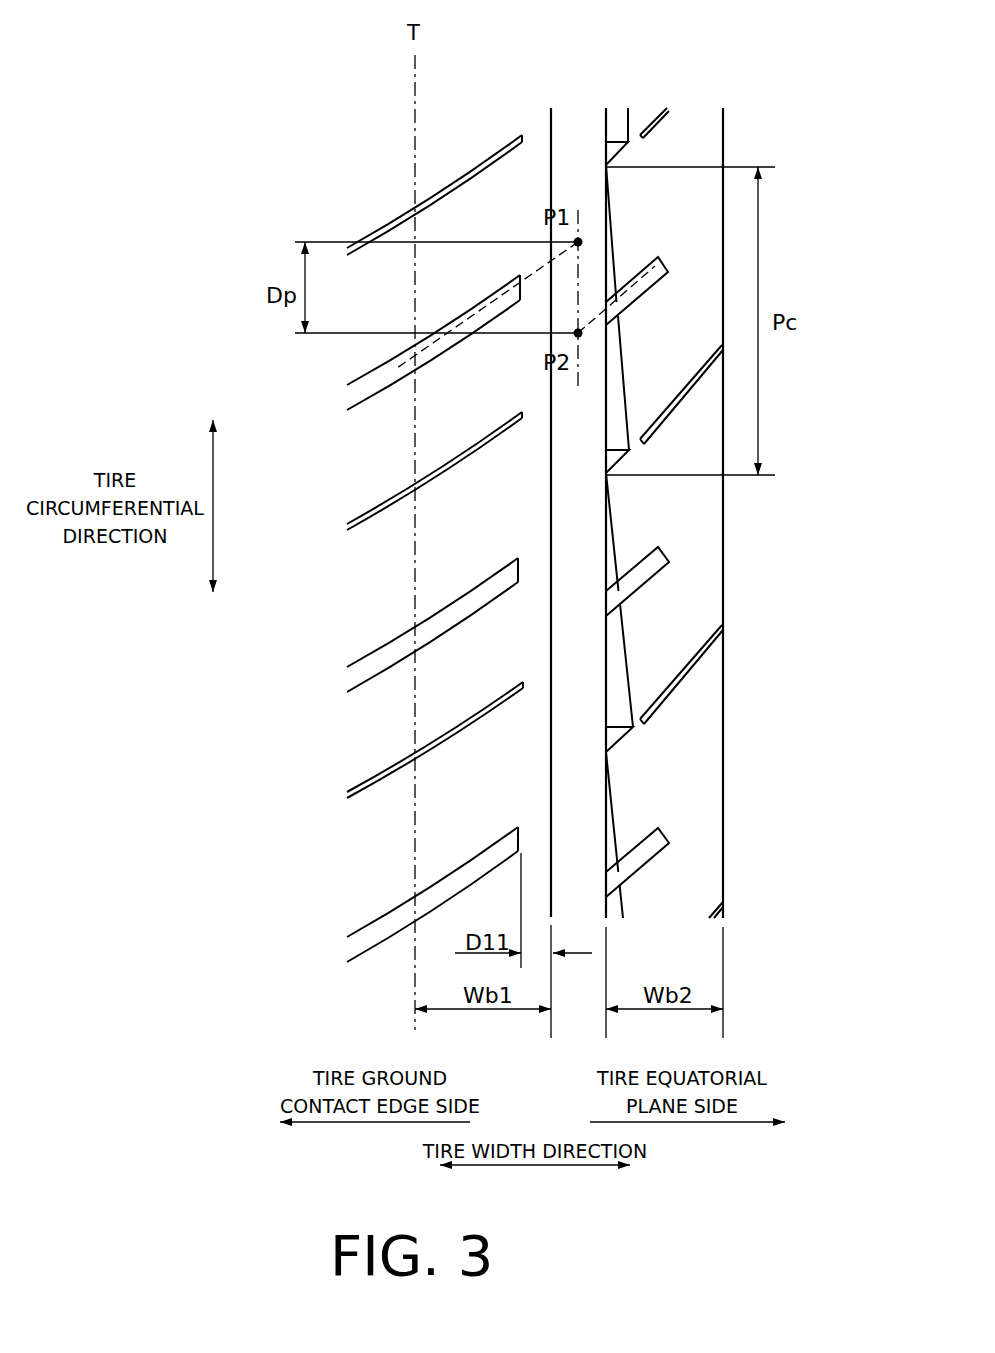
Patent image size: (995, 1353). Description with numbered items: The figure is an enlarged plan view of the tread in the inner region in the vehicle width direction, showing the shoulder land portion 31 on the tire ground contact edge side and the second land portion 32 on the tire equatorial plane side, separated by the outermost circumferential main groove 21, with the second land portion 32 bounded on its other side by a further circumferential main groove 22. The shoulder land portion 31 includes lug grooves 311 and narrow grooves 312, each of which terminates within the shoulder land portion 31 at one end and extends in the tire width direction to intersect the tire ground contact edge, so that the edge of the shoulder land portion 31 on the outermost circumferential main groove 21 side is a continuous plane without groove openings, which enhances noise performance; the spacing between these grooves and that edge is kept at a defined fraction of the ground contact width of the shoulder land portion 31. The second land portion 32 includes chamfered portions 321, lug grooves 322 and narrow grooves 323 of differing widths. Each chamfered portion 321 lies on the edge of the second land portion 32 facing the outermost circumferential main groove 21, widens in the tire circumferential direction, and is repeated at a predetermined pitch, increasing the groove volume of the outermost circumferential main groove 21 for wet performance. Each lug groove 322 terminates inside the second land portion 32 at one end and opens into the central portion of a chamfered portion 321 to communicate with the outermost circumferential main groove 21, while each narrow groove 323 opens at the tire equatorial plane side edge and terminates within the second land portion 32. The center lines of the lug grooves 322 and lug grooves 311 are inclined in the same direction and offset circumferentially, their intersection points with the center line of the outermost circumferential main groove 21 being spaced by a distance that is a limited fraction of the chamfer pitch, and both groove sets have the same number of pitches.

The outermost circumferential main groove 21 is at (573, 127).
The circumferential main groove 22 is at (747, 127).
The shoulder land portion 31 is at (484, 106).
The second land portion 32 is at (682, 105).
The lug groove 311 is at (375, 393).
The narrow groove 312 is at (377, 233).
The chamfered portion 321 is at (623, 408).
The lug groove 322 is at (652, 258).
The narrow groove 323 is at (687, 387).